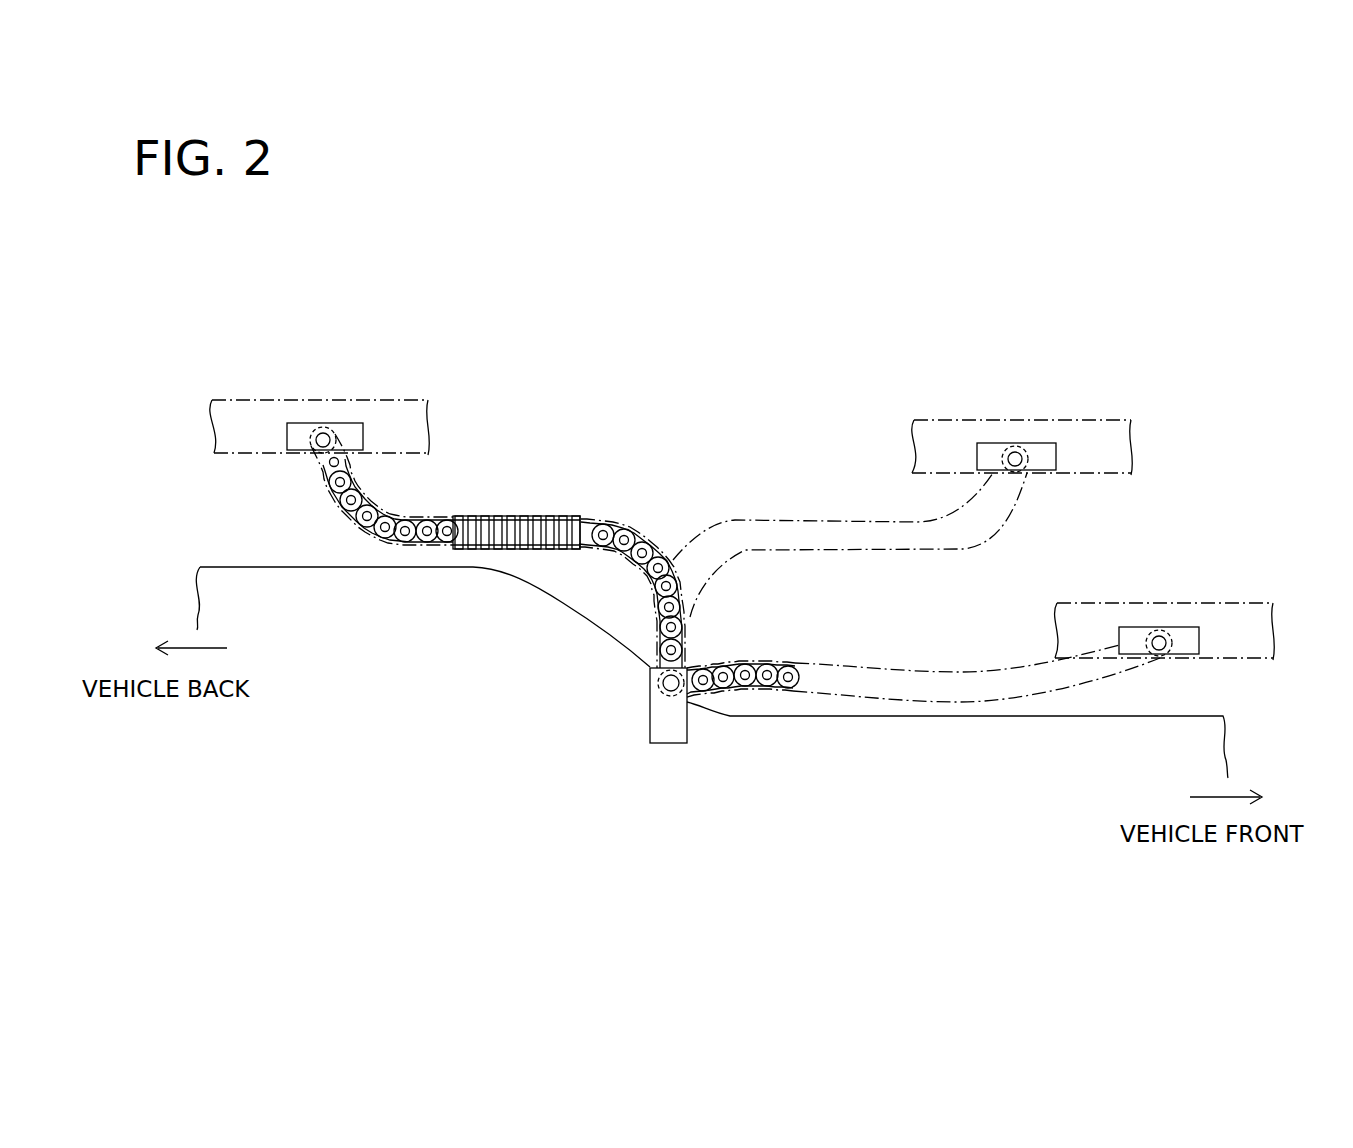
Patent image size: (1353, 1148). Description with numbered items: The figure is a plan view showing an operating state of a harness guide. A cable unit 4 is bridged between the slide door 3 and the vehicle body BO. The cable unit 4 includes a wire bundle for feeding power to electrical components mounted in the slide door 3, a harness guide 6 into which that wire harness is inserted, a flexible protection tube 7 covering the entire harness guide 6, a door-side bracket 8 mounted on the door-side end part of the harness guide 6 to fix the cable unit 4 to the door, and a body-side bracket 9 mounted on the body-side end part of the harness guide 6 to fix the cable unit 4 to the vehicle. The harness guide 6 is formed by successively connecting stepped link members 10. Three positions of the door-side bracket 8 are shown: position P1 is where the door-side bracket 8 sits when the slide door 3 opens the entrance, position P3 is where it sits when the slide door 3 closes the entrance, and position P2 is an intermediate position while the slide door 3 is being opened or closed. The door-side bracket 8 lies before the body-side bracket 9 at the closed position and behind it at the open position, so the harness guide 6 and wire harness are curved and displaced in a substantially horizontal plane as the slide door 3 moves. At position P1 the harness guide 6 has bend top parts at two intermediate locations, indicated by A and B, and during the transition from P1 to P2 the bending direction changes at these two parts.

The slide door 3 is at (248, 410).
The cable unit 4 is at (561, 568).
The harness guide 6 is at (384, 540).
The flexible protection tube 7 is at (500, 548).
The door-side bracket 8 is at (355, 432).
The body-side bracket 9 is at (667, 735).
The stepped link member 10 is at (410, 540).
The position of the door-side bracket with the slide door open P1 is at (330, 382).
The position of the door-side bracket during opening or closing P2 is at (1013, 410).
The position of the door-side bracket with the slide door closed P3 is at (1182, 592).
The bend top part A is at (417, 517).
The bend top part B is at (621, 516).
The vehicle body BO is at (235, 578).